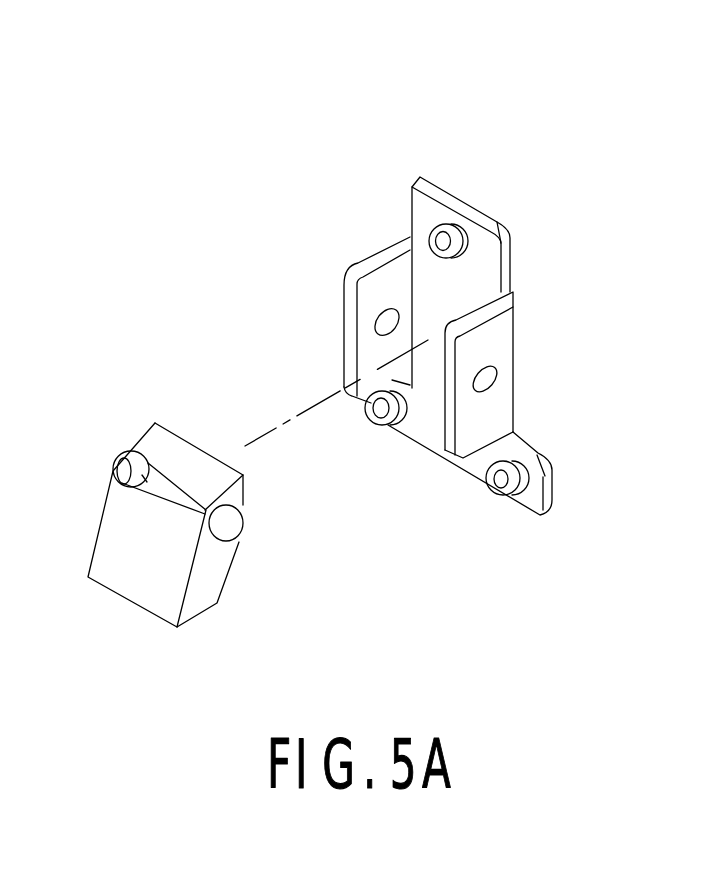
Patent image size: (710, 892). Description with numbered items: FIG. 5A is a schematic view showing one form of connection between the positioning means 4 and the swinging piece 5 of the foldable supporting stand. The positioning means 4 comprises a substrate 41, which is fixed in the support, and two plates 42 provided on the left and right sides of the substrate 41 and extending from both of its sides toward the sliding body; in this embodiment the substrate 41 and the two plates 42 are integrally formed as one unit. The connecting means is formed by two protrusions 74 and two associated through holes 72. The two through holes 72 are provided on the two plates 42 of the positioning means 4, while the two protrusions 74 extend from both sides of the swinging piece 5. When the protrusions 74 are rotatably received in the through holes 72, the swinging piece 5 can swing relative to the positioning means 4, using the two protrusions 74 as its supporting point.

The positioning means 4 is at (512, 227).
The substrate 41 is at (507, 262).
The plates 42 is at (497, 333).
The through holes 72 is at (394, 307).
The swinging piece 5 is at (237, 592).
The protrusions 74 is at (124, 456).